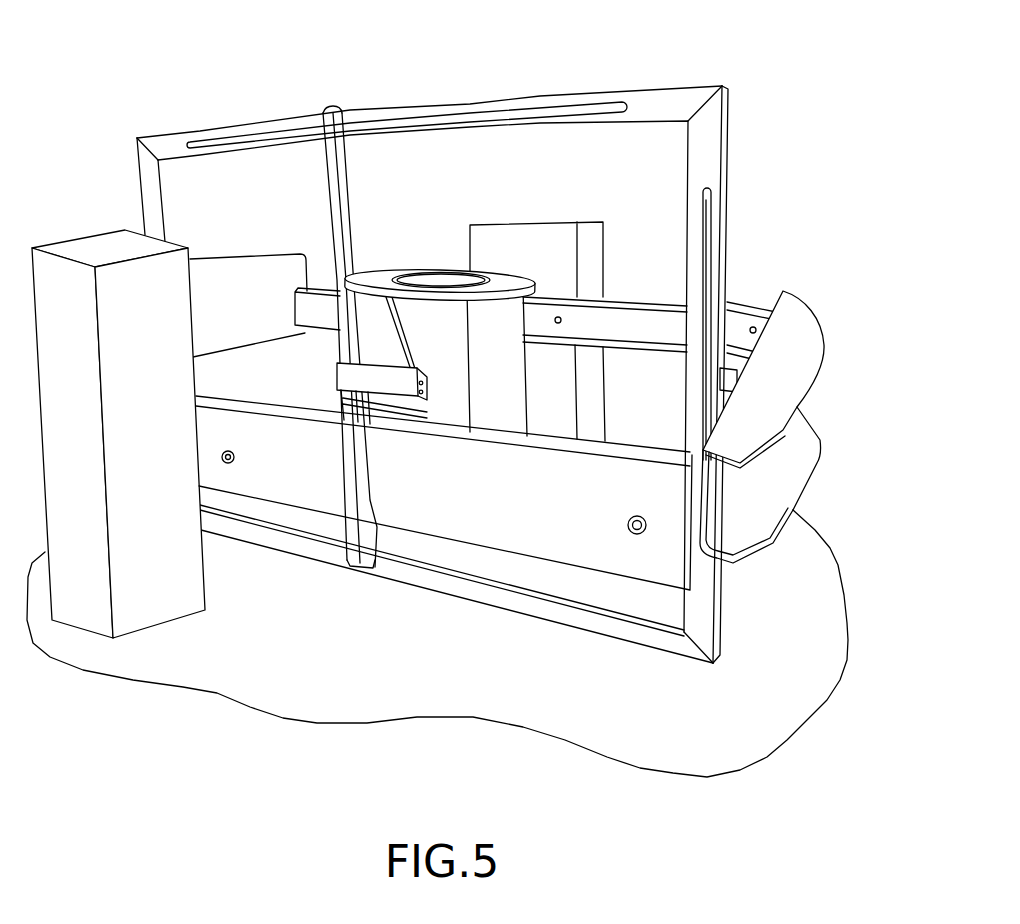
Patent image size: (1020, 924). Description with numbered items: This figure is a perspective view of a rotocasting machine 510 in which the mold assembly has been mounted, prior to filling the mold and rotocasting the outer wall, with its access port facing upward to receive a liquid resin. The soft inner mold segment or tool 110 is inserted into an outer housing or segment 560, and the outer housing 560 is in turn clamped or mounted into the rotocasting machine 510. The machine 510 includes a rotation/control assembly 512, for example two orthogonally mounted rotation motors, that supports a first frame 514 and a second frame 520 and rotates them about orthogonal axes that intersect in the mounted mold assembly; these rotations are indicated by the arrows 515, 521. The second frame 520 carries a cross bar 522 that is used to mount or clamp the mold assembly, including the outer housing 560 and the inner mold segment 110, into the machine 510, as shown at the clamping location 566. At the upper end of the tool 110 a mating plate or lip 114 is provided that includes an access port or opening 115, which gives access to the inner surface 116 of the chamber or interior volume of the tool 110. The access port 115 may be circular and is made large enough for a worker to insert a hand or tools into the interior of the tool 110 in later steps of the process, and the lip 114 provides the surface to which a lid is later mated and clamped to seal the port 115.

The rotocasting machine 510 is at (160, 79).
The second frame 520 is at (654, 84).
The cross bar 522 is at (355, 170).
The rotation arrow 521 is at (735, 423).
The rotation/control assembly 512 is at (158, 424).
The first frame 514 is at (296, 505).
The rotation arrow 515 is at (207, 458).
The mounting or clamping location 566 is at (493, 432).
The mold shell or tool 110 is at (453, 259).
The inner surface 116 is at (430, 282).
The mating plate or lip 114 is at (536, 279).
The access port 115 is at (474, 289).
The outer housing or segment 560 is at (540, 261).